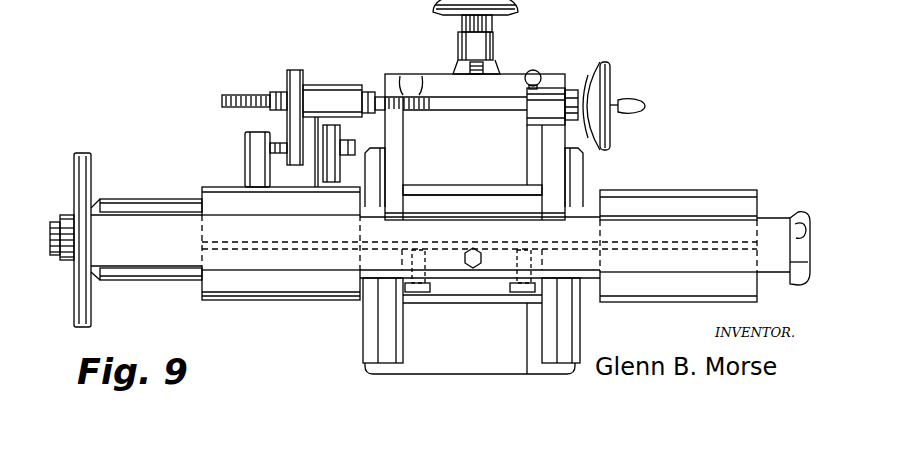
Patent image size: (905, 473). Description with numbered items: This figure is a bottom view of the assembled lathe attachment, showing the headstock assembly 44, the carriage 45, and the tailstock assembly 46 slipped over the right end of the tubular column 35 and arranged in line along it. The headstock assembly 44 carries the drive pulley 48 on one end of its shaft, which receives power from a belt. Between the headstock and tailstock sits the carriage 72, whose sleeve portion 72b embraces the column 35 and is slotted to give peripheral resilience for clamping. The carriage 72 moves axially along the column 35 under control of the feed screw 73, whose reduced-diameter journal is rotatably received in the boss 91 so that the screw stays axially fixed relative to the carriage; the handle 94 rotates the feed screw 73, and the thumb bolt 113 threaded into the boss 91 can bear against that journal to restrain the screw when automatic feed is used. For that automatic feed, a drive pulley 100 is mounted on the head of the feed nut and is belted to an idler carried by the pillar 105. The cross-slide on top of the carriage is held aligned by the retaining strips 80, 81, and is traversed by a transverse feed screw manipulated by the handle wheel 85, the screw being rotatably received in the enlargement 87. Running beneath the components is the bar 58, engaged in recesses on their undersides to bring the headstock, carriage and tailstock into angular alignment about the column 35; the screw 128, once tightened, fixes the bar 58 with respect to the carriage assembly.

The column 35 is at (781, 215).
The headstock assembly 44 is at (261, 305).
The carriage 45 is at (428, 376).
The tailstock assembly 46 is at (649, 185).
The drive pulley 48 is at (73, 178).
The bar 58 is at (139, 224).
The carriage 72 is at (503, 310).
The sleeve portion 72b is at (487, 193).
The feed screw 73 is at (233, 96).
The retaining strip 80 is at (372, 333).
The retaining strip 81 is at (576, 326).
The handle wheel 85 is at (505, 9).
The enlargement 87 is at (458, 50).
The boss 91 is at (560, 88).
The handle 94 is at (611, 77).
The drive pulley 100 is at (287, 72).
The pillar 105 is at (245, 152).
The thumb bolt 113 is at (532, 70).
The screw 128 is at (470, 268).